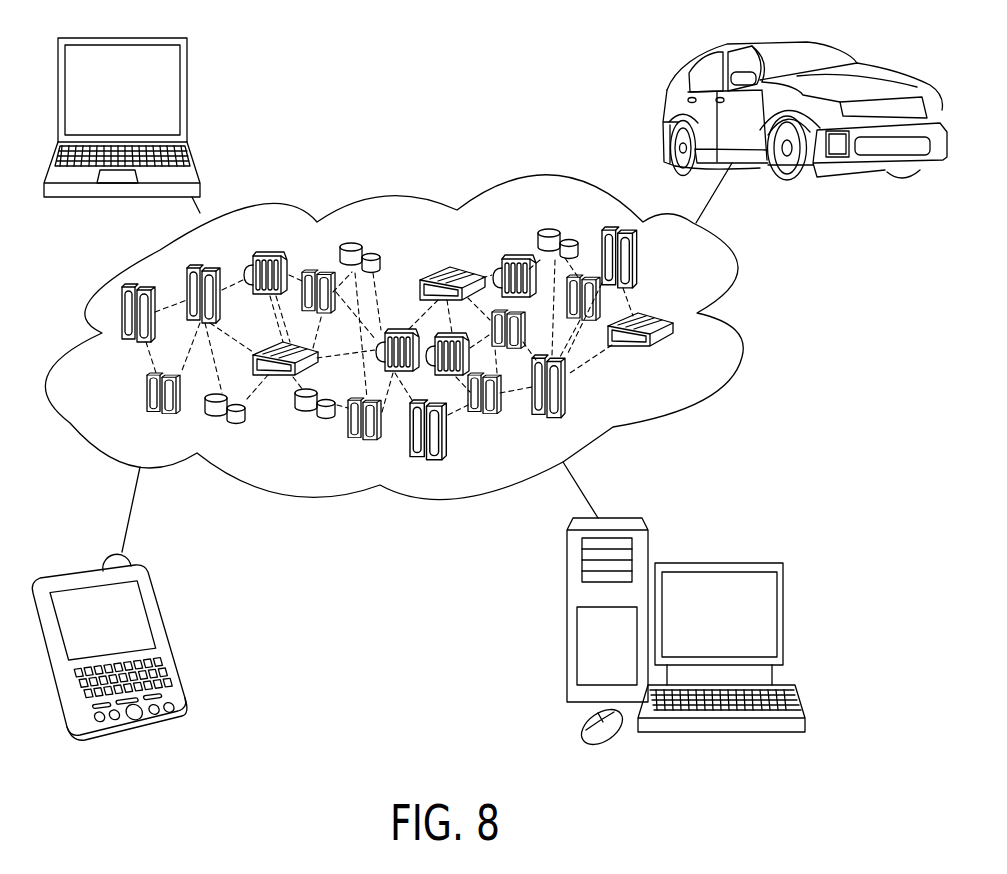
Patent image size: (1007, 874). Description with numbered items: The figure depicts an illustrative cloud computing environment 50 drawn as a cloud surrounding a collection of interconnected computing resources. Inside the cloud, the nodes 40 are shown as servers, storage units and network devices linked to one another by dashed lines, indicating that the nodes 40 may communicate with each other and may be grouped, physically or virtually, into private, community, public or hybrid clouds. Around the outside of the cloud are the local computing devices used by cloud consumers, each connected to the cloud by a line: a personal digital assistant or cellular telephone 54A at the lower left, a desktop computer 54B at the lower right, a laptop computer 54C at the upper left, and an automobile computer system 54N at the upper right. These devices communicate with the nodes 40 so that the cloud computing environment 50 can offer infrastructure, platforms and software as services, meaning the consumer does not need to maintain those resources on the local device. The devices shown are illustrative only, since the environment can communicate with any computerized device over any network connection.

The cloud computing environment 50 is at (738, 262).
The nodes 40 is at (700, 372).
The personal digital assistant (PDA) or cellular telephone 54A is at (155, 612).
The desktop computer 54B is at (785, 615).
The laptop computer 54C is at (187, 95).
The automobile computer system 54N is at (852, 63).